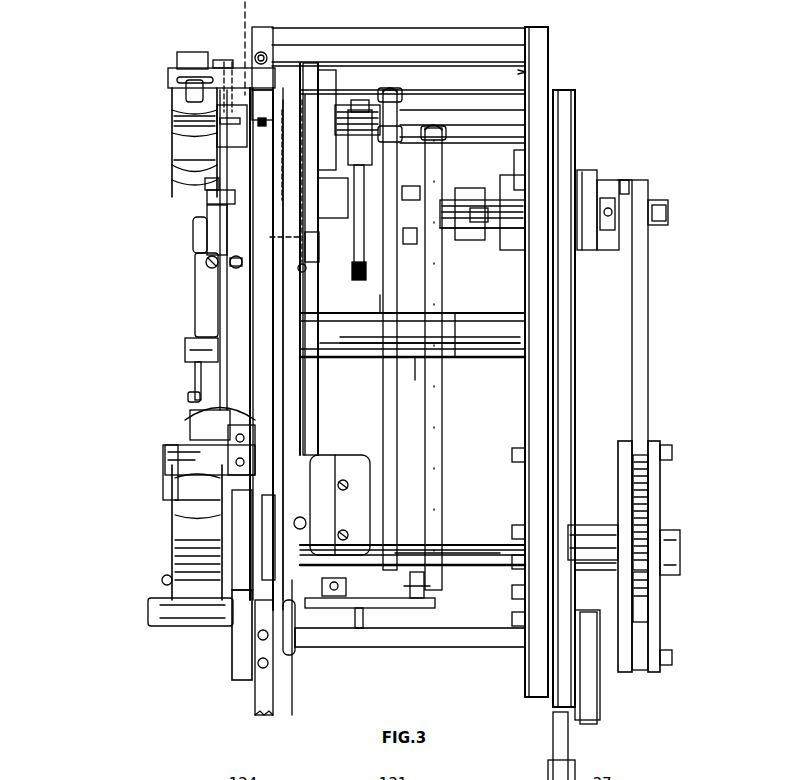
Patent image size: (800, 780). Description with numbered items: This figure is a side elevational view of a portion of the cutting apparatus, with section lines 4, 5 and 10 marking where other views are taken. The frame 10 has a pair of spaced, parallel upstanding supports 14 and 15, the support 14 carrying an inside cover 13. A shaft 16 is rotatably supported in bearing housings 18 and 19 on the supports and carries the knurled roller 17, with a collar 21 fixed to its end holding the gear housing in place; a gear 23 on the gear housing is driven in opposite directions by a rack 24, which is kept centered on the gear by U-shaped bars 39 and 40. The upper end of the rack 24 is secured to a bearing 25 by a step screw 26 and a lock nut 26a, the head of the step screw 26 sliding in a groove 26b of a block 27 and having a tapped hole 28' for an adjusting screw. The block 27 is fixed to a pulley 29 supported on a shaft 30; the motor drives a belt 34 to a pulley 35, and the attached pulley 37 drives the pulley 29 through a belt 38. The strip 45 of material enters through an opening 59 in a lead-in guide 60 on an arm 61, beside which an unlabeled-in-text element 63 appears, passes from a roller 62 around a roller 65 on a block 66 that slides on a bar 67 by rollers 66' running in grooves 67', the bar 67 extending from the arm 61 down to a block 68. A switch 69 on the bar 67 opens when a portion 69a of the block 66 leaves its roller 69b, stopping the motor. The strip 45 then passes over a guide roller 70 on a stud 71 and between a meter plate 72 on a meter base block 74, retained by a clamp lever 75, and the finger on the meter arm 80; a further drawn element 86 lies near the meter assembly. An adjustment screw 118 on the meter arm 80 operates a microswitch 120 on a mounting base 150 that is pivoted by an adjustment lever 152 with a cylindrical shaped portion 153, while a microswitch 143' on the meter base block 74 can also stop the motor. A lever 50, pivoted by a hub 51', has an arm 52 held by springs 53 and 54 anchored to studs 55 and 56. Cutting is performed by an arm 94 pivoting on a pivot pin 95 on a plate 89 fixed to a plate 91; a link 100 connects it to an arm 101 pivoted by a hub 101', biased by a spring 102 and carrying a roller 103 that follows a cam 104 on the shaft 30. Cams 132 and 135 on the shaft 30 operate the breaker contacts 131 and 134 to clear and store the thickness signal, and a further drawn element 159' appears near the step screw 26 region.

The section line 4 is at (485, 657).
The section line 5 is at (180, 515).
The frame 10 is at (72, 552).
The inside cover 13 is at (318, 446).
The upstanding support 14 is at (190, 422).
The upstanding support 15 is at (549, 52).
The shaft 16 is at (467, 545).
The knurled roller 17 is at (172, 560).
The bearing housing 18 is at (322, 583).
The bearing housing 19 is at (583, 525).
The collar 21 is at (680, 568).
The gear 23 is at (650, 586).
The rack 24 is at (648, 504).
The bearing 25 is at (620, 238).
The step screw 26 is at (668, 214).
The lock nut 26a is at (656, 200).
The groove 26b is at (617, 255).
The block 27 is at (605, 252).
The tapped hole 28' is at (646, 229).
The pulley 29 is at (577, 112).
The shaft 30 is at (462, 232).
The belt 34 is at (598, 722).
The pulley 35 is at (600, 698).
The pulley 37 is at (561, 746).
The belt 38 is at (575, 394).
The U-shaped bar 39 is at (618, 452).
The U-shaped bar 40 is at (660, 478).
The strip of material 45 is at (195, 100).
The lever 50 is at (340, 312).
The hub 51' is at (430, 365).
The upwardly extending arm 52 is at (382, 292).
The spring 53 is at (386, 88).
The spring 54 is at (400, 142).
The stud 55 is at (510, 77).
The stud 56 is at (470, 143).
The opening 59 is at (195, 80).
The lead-in guide 60 is at (168, 75).
The arm 61 is at (264, 95).
The roller 62 is at (172, 106).
The block 63 is at (202, 52).
The roller 65 is at (172, 490).
The block 66 is at (219, 636).
The rollers 66' is at (253, 540).
The bar 67 is at (328, 275).
The longitudinal groove 67' is at (263, 526).
The block 68 is at (255, 695).
The switch 69 is at (330, 508).
The portion of the block 69a is at (275, 708).
The roller 69b is at (312, 498).
The guide roller 70 is at (200, 185).
The stud 71 is at (207, 198).
The meter plate 72 is at (165, 454).
The meter base block 74 is at (185, 345).
The clamp lever 75 is at (188, 396).
The meter arm 80 is at (196, 376).
The bolt 86 is at (236, 268).
The plate 89 is at (342, 610).
The plate 91 is at (415, 648).
The arm 94 is at (378, 610).
The pivot pin 95 is at (318, 600).
The link 100 is at (425, 588).
The arm 101 is at (462, 365).
The hub 101' is at (400, 379).
The spring 102 is at (433, 126).
The roller 103 is at (418, 195).
The cam 104 is at (410, 244).
The adjustment screw 118 is at (200, 222).
The microswitch 120 is at (196, 262).
The normally closed breaker contacts 131 is at (320, 90).
The cam 132 is at (305, 249).
The normally open breaker contacts 134 is at (350, 108).
The cam 135 is at (348, 268).
The microswitch 143' is at (176, 277).
The mounting base 150 is at (255, 320).
The adjustment lever 152 is at (244, 26).
The cylindrical shaped portion 153 is at (230, 125).
The part 159' is at (648, 173).